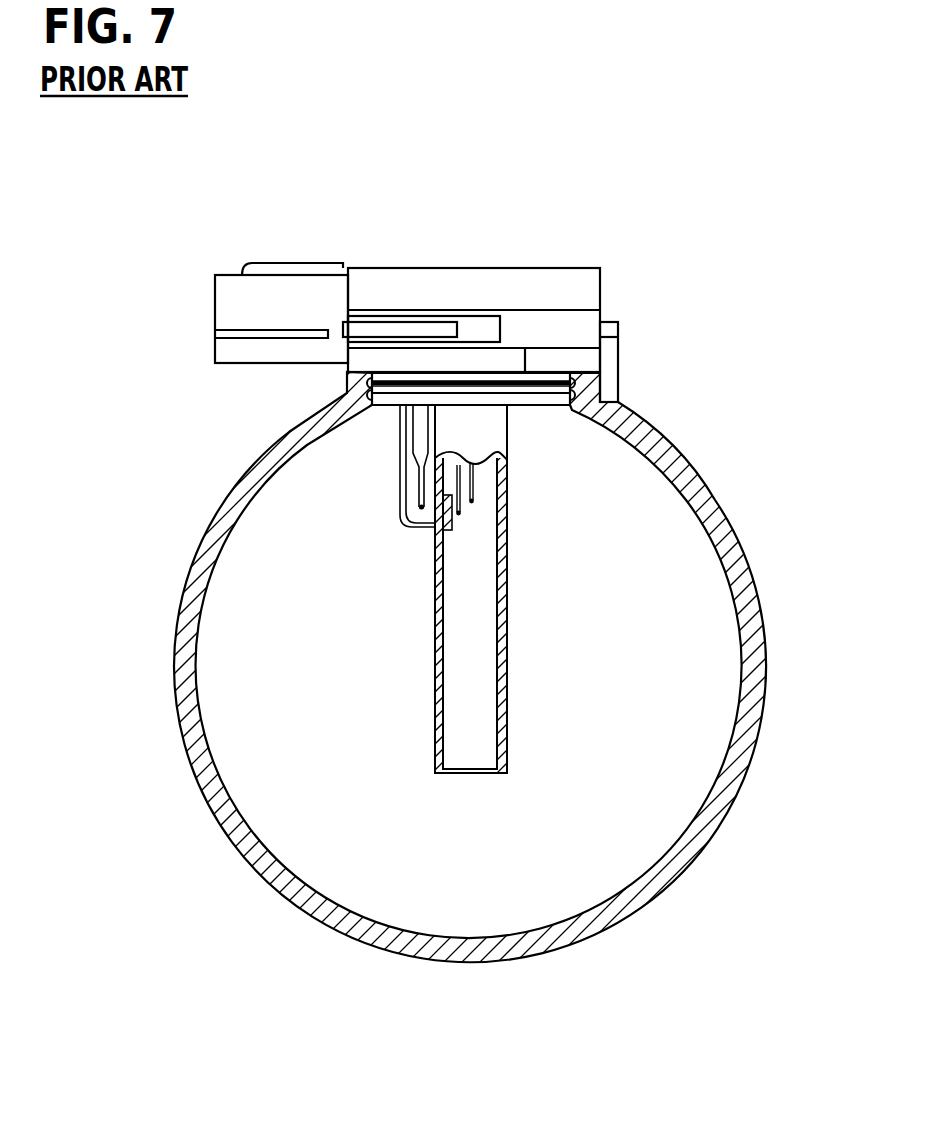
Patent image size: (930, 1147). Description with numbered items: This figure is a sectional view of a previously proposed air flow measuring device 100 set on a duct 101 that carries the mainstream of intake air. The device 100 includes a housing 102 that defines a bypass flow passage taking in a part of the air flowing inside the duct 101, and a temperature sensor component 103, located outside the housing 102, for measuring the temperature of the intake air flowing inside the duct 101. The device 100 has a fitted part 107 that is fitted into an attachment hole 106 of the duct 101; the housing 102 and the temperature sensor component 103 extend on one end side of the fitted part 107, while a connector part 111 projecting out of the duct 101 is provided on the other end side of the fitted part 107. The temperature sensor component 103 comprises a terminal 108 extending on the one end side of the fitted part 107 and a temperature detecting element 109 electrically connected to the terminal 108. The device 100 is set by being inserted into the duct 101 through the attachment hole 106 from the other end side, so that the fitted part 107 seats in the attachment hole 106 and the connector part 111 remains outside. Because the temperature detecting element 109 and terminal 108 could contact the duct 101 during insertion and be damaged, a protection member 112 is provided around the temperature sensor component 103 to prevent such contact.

The air flow measuring device 100 is at (647, 228).
The duct 101 is at (728, 552).
The housing 102 is at (500, 642).
The temperature sensor component 103 is at (312, 522).
The attachment hole 106 is at (568, 380).
The fitted part 107 is at (398, 392).
The terminal 108 is at (421, 486).
The temperature detecting element 109 is at (410, 529).
The connector part 111 is at (423, 282).
The protection member 112 is at (435, 527).